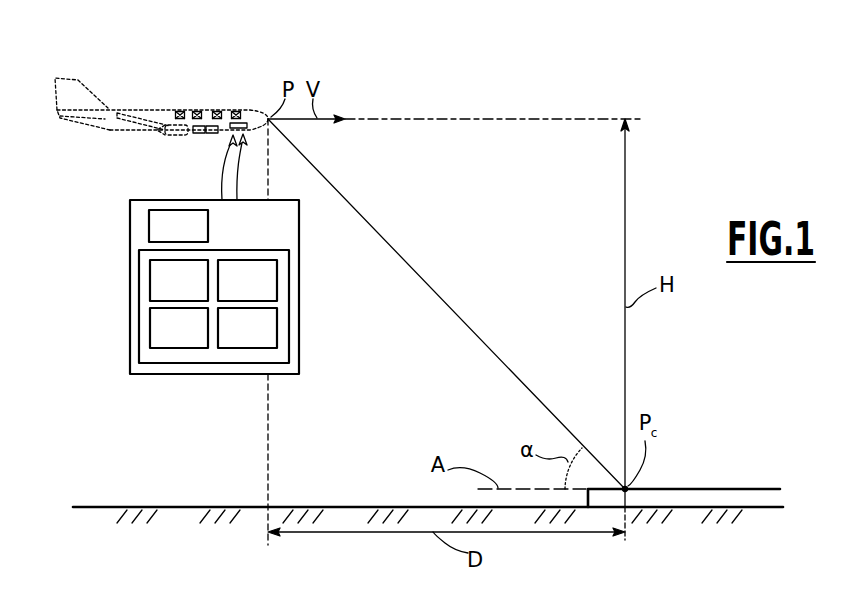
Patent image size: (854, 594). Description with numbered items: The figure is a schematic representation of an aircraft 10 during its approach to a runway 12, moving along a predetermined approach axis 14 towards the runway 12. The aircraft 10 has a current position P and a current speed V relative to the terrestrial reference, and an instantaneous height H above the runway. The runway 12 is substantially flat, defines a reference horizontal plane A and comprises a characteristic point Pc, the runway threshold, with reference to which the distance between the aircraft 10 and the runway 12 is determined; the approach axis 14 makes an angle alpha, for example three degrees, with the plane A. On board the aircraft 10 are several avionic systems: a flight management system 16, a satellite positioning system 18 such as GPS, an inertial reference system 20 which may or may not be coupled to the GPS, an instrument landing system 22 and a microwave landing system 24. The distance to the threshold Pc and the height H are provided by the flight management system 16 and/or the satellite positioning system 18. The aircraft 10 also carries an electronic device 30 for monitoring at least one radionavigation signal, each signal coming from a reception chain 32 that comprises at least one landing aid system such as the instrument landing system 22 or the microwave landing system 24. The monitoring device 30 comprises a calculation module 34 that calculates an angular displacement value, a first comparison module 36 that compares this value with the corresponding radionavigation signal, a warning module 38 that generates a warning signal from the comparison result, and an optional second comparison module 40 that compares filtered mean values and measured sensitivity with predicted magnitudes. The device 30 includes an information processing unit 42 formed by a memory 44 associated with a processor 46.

The aircraft 10 is at (273, 76).
The runway 12 is at (683, 492).
The predetermined approach axis 14 is at (388, 240).
The flight management system 16 is at (217, 110).
The satellite positioning system 18 is at (197, 110).
The inertial reference system 20 is at (178, 110).
The instrument landing system 22 is at (213, 133).
The microwave landing system 24 is at (200, 133).
The electronic device for monitoring at least one radionavigation signal 30 is at (250, 129).
The reception chain 32 is at (236, 110).
The calculation module 34 is at (165, 293).
The first comparison module 36 is at (233, 293).
The warning module 38 is at (165, 341).
The second comparison module 40 is at (233, 341).
The information processing unit 42 is at (300, 290).
The memory 44 is at (289, 322).
The processor 46 is at (158, 222).